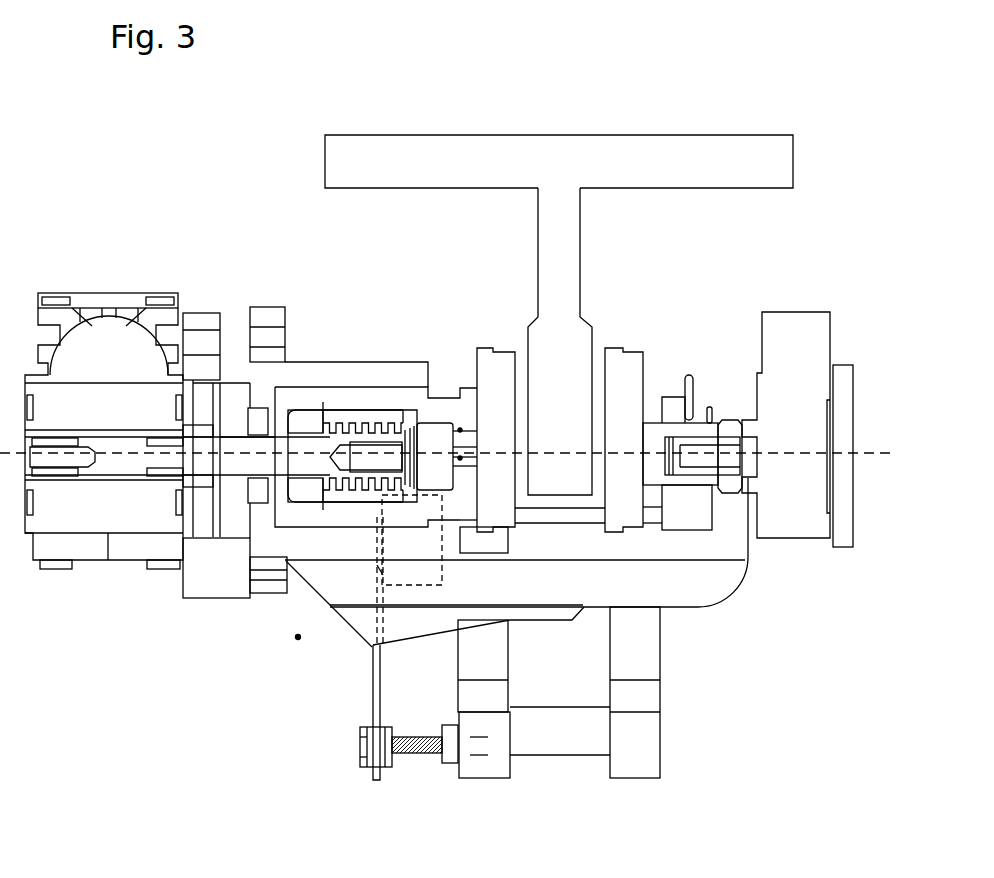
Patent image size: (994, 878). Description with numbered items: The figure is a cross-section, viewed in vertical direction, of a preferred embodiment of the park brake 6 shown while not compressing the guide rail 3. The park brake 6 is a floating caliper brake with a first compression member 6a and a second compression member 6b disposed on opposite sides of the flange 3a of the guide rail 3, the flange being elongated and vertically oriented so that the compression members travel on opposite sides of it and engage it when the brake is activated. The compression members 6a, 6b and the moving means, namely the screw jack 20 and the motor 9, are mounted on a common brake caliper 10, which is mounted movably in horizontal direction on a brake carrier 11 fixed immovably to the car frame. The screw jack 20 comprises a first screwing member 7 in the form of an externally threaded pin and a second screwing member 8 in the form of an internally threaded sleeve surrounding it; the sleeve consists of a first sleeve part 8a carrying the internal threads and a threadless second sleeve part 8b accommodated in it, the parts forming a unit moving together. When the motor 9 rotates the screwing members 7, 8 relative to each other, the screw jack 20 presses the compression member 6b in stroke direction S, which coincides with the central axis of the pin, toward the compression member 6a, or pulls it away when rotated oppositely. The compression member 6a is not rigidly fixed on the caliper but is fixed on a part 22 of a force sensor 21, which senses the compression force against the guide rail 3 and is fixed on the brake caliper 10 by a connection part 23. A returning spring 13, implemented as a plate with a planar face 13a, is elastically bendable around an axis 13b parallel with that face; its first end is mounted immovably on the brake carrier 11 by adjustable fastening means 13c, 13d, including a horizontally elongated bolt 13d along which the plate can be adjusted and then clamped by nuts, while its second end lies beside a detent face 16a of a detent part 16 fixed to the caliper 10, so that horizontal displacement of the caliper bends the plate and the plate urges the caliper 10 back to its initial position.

The guide rail 3 is at (580, 242).
The flange 3a is at (575, 441).
The park brake 6 is at (159, 753).
The first compression member 6a is at (638, 441).
The second compression member 6b is at (509, 438).
The first screwing member 7 is at (290, 468).
The second screwing member 8 is at (460, 388).
The first sleeve part 8a is at (415, 398).
The second sleeve part 8b is at (383, 420).
The motor 9 is at (120, 298).
The brake caliper 10 is at (576, 594).
The brake carrier 11 is at (471, 673).
The returning spring 13 is at (372, 668).
The planar face 13a is at (381, 585).
The axis 13b is at (298, 637).
The adjustable fastening means 13c is at (387, 727).
The bolt 13d is at (417, 737).
The detent part 16 is at (442, 563).
The detent face 16a is at (380, 570).
The screw jack 20 is at (461, 307).
The force sensor 21 is at (760, 337).
The part of the force sensor 22 is at (653, 477).
The connection part 23 is at (843, 367).
The stroke direction S is at (447, 442).